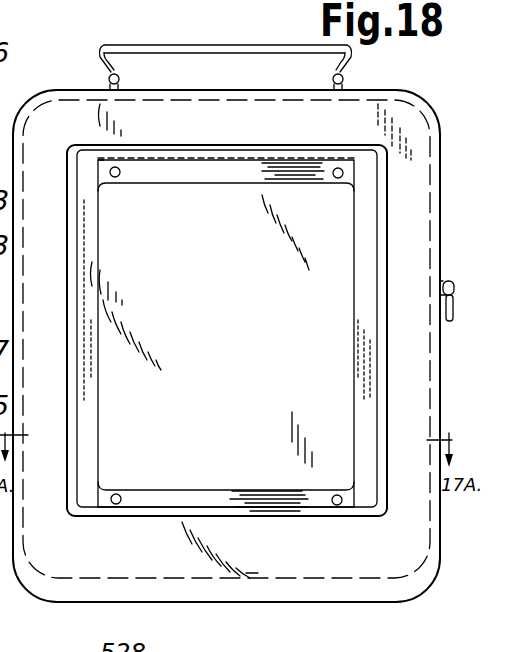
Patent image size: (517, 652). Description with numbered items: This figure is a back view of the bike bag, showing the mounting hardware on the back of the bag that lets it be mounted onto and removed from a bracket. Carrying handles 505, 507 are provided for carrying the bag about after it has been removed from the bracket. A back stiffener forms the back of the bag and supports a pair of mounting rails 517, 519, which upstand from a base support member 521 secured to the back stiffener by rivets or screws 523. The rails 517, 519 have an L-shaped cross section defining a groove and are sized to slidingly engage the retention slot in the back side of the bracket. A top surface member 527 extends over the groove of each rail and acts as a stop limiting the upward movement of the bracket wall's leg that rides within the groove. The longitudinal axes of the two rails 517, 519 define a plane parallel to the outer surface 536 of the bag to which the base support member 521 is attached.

The carrying handle 505 is at (447, 320).
The carrying handle 507 is at (140, 43).
The mounting rail 517 is at (90, 272).
The mounting rail 519 is at (369, 282).
The base support member 521 is at (163, 502).
The rivets or screws 523 is at (117, 177).
The top surface member 527 is at (369, 148).
The outer surface 536 is at (418, 545).